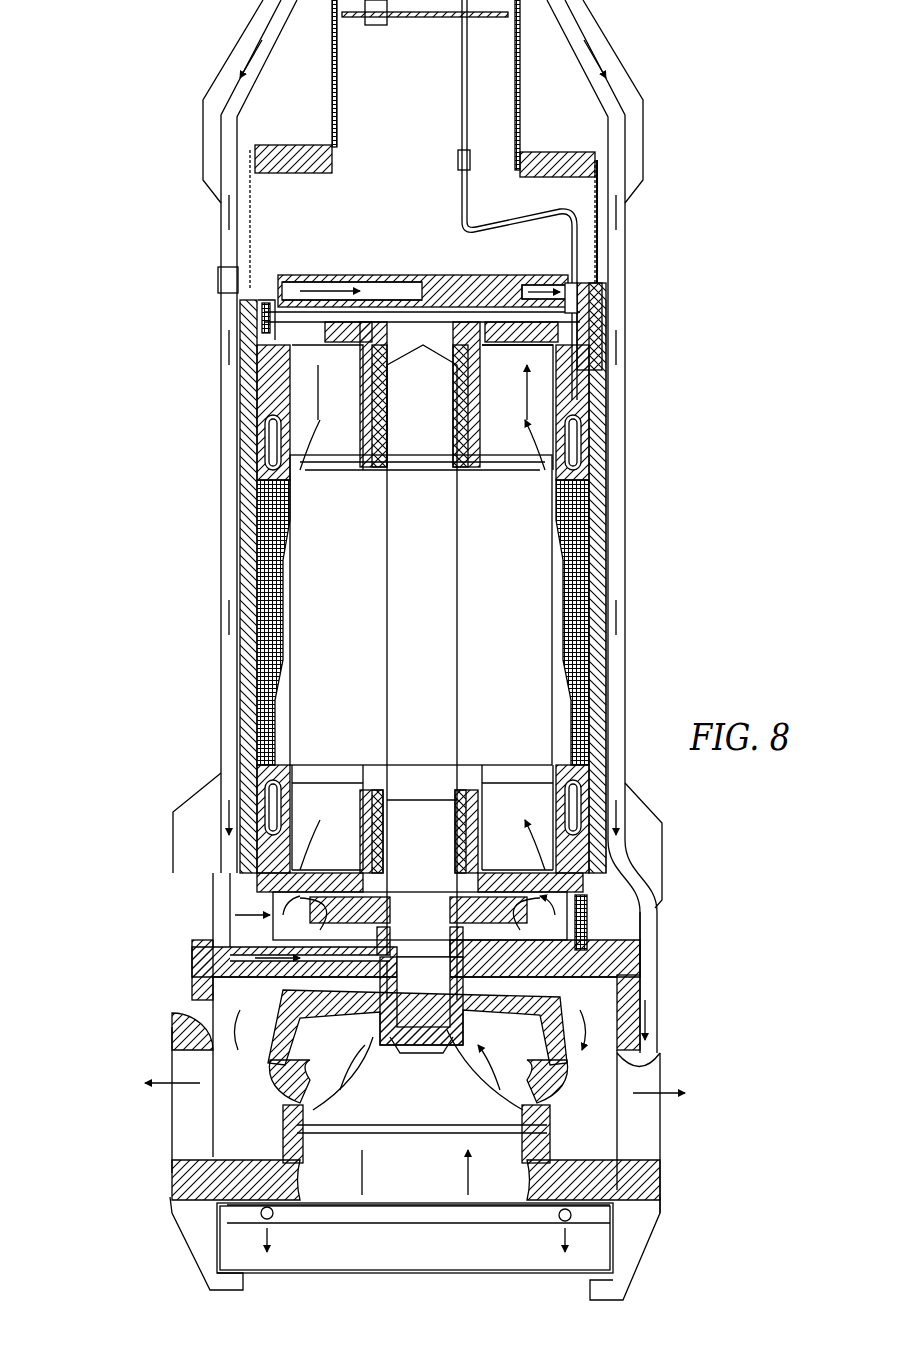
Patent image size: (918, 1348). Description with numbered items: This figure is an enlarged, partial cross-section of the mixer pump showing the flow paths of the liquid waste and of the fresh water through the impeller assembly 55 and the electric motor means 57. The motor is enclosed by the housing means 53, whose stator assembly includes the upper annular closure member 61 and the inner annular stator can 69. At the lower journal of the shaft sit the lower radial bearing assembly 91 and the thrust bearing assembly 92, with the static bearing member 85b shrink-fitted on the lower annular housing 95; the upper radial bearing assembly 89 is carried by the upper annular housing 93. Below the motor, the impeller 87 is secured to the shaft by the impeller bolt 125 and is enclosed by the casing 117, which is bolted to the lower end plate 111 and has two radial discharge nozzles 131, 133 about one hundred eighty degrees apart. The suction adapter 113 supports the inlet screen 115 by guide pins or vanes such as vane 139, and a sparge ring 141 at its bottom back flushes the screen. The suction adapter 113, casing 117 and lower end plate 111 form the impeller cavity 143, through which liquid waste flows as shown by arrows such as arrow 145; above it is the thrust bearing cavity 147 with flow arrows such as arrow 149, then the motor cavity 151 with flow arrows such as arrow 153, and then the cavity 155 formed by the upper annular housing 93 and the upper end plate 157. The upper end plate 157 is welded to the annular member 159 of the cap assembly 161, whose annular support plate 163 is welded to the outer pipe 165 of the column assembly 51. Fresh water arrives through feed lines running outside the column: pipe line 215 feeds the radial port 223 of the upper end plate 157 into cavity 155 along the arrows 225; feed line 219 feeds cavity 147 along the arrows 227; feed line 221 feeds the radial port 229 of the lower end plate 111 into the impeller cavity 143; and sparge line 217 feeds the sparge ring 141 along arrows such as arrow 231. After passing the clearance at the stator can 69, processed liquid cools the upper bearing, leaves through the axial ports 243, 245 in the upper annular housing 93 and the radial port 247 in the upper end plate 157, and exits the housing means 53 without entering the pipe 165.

The column assembly 51 is at (524, 107).
The housing means 53 is at (642, 517).
The impeller assembly 55 is at (101, 1073).
The electric motor means 57 is at (602, 678).
The upper annular closure member 61 is at (600, 327).
The inner annular stator can 69 is at (589, 412).
The static bearing member 85b is at (373, 793).
The impeller 87 is at (550, 1037).
The upper radial bearing assembly 89 is at (484, 458).
The lower radial bearing assembly 91 is at (487, 830).
The thrust bearing assembly 92 is at (327, 870).
The upper annular housing 93 is at (507, 337).
The lower annular housing 95 is at (490, 873).
The lower end plate 111 is at (623, 928).
The suction adapter 113 is at (294, 1187).
The inlet screen 115 is at (410, 1275).
The casing 117 is at (172, 1043).
The impeller bolt 125 is at (417, 1052).
The radial discharge nozzle 131 is at (662, 1077).
The radial discharge nozzle 133 is at (172, 1118).
The guide pin or vane 139 is at (197, 1242).
The sparge ring 141 is at (297, 1213).
The impeller cavity 143 is at (640, 988).
The arrow (liquid waste flow direction) 145 is at (466, 1180).
The thrust bearing cavity 147 is at (593, 875).
The arrow (flow direction in thrust bearing cavity) 149 is at (565, 913).
The motor cavity 151 is at (480, 783).
The arrow (flow direction in motor cavity) 153 is at (296, 778).
The cavity 155 is at (453, 290).
The upper end plate 157 is at (305, 273).
The annular member 159 is at (599, 260).
The cap assembly 161 is at (228, 142).
The annular support plate 163 is at (308, 150).
The outer pipe 165 is at (332, 87).
The purge feed pipe line 215 is at (220, 240).
The sparge line 217 is at (617, 557).
The purge feed line 219 is at (222, 455).
The purge feed line 221 is at (222, 932).
The radial port 223 is at (387, 290).
The arrows (fresh water flow path) 225 is at (360, 280).
The arrows (fresh water flow path) 227 is at (222, 607).
The radial port 229 is at (263, 970).
The arrow (sparge flow direction) 231 is at (563, 1238).
The axial port 243 is at (250, 303).
The axial port 245 is at (575, 315).
The radial port 247 is at (530, 280).